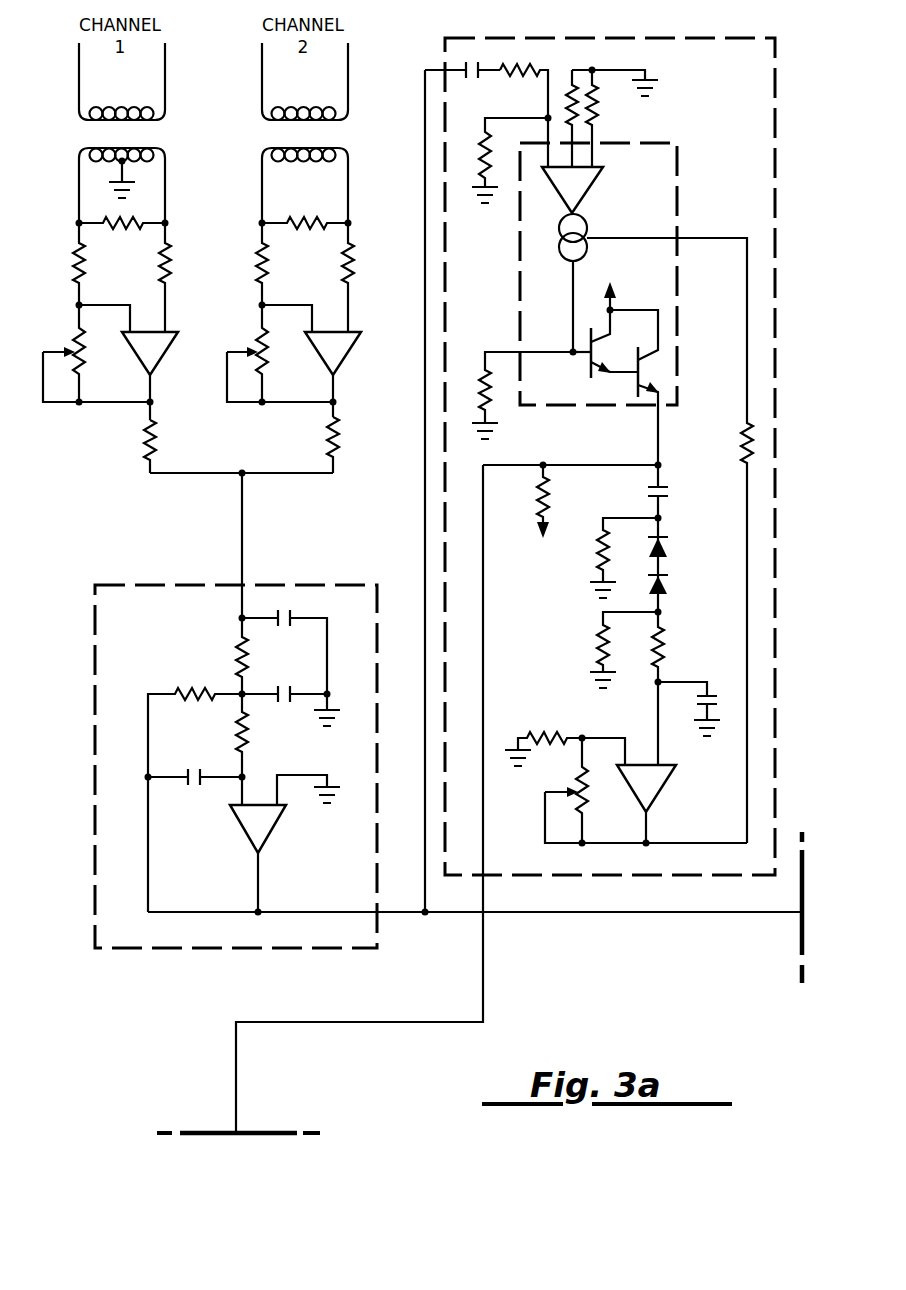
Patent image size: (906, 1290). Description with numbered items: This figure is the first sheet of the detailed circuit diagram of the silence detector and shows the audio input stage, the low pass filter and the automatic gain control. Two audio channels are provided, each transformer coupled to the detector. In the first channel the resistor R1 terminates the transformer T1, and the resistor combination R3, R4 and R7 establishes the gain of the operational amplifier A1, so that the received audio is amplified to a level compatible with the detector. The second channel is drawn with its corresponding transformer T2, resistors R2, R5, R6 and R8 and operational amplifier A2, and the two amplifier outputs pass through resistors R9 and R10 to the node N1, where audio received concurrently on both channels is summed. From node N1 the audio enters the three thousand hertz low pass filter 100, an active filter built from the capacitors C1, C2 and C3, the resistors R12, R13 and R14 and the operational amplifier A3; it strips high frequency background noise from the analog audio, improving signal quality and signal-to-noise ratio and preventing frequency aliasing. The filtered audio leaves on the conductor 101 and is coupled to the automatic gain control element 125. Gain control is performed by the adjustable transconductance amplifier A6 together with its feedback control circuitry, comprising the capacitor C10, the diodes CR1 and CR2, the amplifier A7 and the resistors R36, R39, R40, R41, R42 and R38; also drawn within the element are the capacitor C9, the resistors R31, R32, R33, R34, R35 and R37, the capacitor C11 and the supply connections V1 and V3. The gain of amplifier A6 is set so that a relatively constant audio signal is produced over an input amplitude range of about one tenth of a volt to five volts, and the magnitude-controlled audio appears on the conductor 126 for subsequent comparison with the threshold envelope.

The transformer T1 is at (109, 133).
The channel 2 input transformer T2 is at (292, 133).
The resistor R1 is at (122, 235).
The resistor R2 is at (305, 235).
The resistor R3 is at (92, 266).
The resistor R4 is at (181, 277).
The resistor R5 is at (275, 266).
The resistor R6 is at (364, 277).
The resistor R7 is at (96, 355).
The potentiometer R8 is at (280, 355).
The resistor R9 is at (166, 446).
The resistor R10 is at (353, 445).
The operational amplifier A1 is at (156, 376).
The operational amplifier A2 is at (338, 374).
The node N1 is at (242, 473).
The low pass filter 100 is at (152, 585).
The capacitor C1 is at (283, 642).
The capacitor C2 is at (291, 695).
The capacitor C3 is at (194, 765).
The resistor R12 is at (260, 658).
The resistor R13 is at (260, 749).
The resistor R14 is at (195, 789).
The operational amplifier A3 is at (285, 845).
The automatic gain control element 125 is at (642, 38).
The capacitor C9 is at (462, 60).
The resistor R31 is at (526, 104).
The resistor R32 is at (569, 101).
The resistor R33 is at (611, 117).
The resistor R34 is at (500, 160).
The transconductance amplifier A6 is at (677, 162).
The supply voltage V1 is at (612, 286).
The resistor R35 is at (512, 395).
The resistor R38 is at (670, 540).
The resistor R37 is at (563, 494).
The supply voltage V3 is at (540, 542).
The capacitor C10 is at (678, 493).
The resistor R36 is at (614, 558).
The diode CR1 is at (679, 546).
The diode CR2 is at (679, 595).
The resistor R39 is at (607, 650).
The resistor R40 is at (679, 688).
The capacitor C11 is at (706, 709).
The resistor R41 is at (565, 737).
The resistor R42 is at (646, 792).
The amplifier A7 is at (651, 806).
The conductor 101 is at (680, 912).
The conductor 126 is at (237, 1077).